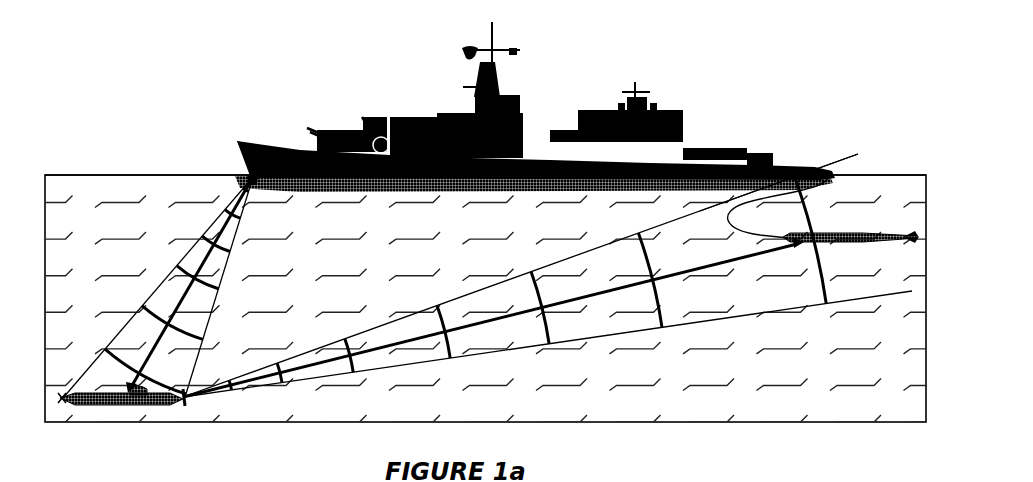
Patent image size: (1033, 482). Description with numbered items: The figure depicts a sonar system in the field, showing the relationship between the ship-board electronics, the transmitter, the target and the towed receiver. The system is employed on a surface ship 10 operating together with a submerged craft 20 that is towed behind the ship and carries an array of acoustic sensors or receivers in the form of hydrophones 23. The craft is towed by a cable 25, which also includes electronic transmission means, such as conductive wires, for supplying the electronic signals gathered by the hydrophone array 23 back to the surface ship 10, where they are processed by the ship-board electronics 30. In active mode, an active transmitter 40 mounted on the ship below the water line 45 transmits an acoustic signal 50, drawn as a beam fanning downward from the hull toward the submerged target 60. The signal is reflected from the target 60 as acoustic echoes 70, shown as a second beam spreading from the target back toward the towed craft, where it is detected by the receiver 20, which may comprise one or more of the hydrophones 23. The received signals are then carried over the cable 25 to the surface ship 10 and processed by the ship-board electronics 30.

The surface ship 10 is at (515, 102).
The submerged craft 20 is at (890, 233).
The hydrophones 23 is at (832, 233).
The cable 25 is at (789, 176).
The ship-board electronics 30 is at (387, 143).
The active transmitter 40 is at (240, 143).
The water line 45 is at (143, 183).
The acoustic signal 50 is at (197, 277).
The target 60 is at (90, 400).
The acoustic echoes 70 is at (534, 304).